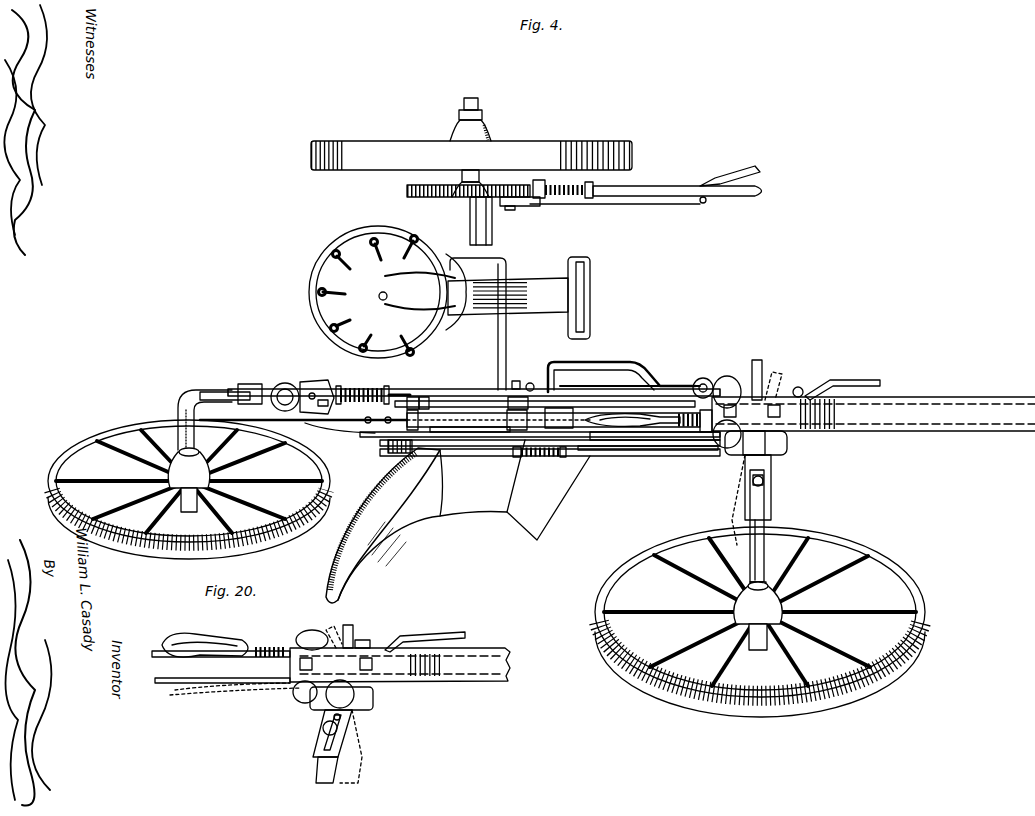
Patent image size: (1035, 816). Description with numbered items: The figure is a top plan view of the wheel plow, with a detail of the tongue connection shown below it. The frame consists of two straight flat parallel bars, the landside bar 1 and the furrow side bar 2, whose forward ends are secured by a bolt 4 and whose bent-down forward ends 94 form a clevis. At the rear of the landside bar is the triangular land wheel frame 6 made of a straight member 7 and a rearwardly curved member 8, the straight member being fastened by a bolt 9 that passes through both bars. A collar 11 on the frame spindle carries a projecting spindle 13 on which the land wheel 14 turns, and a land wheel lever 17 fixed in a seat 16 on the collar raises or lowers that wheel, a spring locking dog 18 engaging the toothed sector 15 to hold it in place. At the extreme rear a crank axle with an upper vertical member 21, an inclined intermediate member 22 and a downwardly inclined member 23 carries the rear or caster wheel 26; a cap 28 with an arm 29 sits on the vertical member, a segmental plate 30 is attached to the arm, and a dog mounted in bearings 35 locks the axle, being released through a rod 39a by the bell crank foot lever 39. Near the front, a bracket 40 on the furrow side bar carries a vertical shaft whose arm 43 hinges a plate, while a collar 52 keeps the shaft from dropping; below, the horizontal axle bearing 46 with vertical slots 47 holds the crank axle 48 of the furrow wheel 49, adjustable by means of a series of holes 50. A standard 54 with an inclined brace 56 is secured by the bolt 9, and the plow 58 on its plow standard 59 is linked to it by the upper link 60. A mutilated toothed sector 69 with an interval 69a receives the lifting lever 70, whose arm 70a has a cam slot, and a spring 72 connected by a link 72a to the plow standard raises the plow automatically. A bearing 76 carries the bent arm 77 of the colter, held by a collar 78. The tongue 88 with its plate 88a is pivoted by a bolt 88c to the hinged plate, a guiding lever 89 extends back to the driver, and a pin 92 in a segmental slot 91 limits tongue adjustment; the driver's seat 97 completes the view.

In FIG. 4, the landside bar 1 is at (458, 400).
In FIG. 20, the landside bar 1 is at (210, 658).
In FIG. 4, the furrow side bar 2 is at (378, 440).
In FIG. 20, the furrow side bar 2 is at (215, 685).
In FIG. 4, the bolt 4 is at (802, 390).
In FIG. 4, the land wheel frame 6 is at (553, 398).
In FIG. 4, the straight member 7 is at (517, 371).
In FIG. 4, the rearwardly curved member 8 is at (420, 378).
In FIG. 4, the bolt 9 is at (530, 383).
In FIG. 4, the collar 11 is at (482, 293).
In FIG. 4, the spindle 13 is at (480, 108).
In FIG. 4, the land wheel 14 is at (575, 143).
In FIG. 4, the gear rack 15 is at (468, 200).
In FIG. 4, the seat 16 is at (532, 207).
In FIG. 4, the land wheel lever 17 is at (646, 192).
In FIG. 4, the spring locking dog 18 is at (560, 188).
In FIG. 4, the upper vertical member 21 is at (317, 386).
In FIG. 4, the intermediate member 22 is at (240, 392).
In FIG. 4, the downwardly inclined member 23 is at (279, 412).
In FIG. 4, the rear or caster wheel 26 is at (189, 499).
In FIG. 4, the cap 28 is at (285, 390).
In FIG. 4, the arm 29 is at (322, 386).
In FIG. 4, the segmental plate 30 is at (373, 383).
In FIG. 4, the bearings 35 is at (380, 390).
In FIG. 4, the bell crank foot lever 39 is at (615, 388).
In FIG. 4, the rod 39a is at (450, 395).
In FIG. 4, the bracket 40 is at (790, 450).
In FIG. 20, the bracket 40 is at (374, 700).
In FIG. 4, the arm 43 is at (767, 375).
In FIG. 20, the arm 43 is at (352, 628).
In FIG. 4, the horizontal axle bearing 46 is at (772, 488).
In FIG. 4, the vertical slots 47 is at (766, 503).
In FIG. 20, the vertical slots 47 is at (352, 722).
In FIG. 4, the crank axle 48 is at (770, 540).
In FIG. 20, the crank axle 48 is at (340, 772).
In FIG. 4, the furrow wheel 49 is at (760, 622).
In FIG. 4, the series of holes 50 is at (772, 478).
In FIG. 20, the series of holes 50 is at (350, 736).
In FIG. 4, the collar 52 is at (708, 434).
In FIG. 4, the standard 54 is at (516, 432).
In FIG. 4, the inclined brace 56 is at (575, 428).
In FIG. 4, the plow 58 is at (515, 458).
In FIG. 4, the plow standard 59 is at (440, 432).
In FIG. 4, the upper link 60 is at (465, 457).
In FIG. 4, the mutilated toothed sector 69 is at (430, 457).
In FIG. 4, the interval 69a is at (590, 477).
In FIG. 4, the lifting lever 70 is at (632, 442).
In FIG. 4, the arm 70a is at (393, 450).
In FIG. 4, the spring 72 is at (212, 390).
In FIG. 4, the link 72a is at (345, 432).
In FIG. 4, the bearing 76 is at (704, 377).
In FIG. 4, the bent arm 77 is at (660, 382).
In FIG. 4, the collar 78 is at (724, 380).
In FIG. 4, the tongue 88 is at (873, 414).
In FIG. 20, the tongue 88 is at (400, 665).
In FIG. 4, the plate 88a is at (690, 430).
In FIG. 20, the plate 88a is at (282, 706).
In FIG. 4, the bolt 88c is at (801, 413).
In FIG. 20, the bolt 88c is at (400, 663).
In FIG. 4, the guiding lever 89 is at (660, 428).
In FIG. 20, the guiding lever 89 is at (225, 640).
In FIG. 20, the segmental slot 91 is at (272, 645).
In FIG. 4, the bolt or pin 92 is at (875, 414).
In FIG. 20, the bolt or pin 92 is at (400, 664).
In FIG. 4, the forward ends 94 is at (842, 381).
In FIG. 4, the driver's seat 97 is at (387, 292).